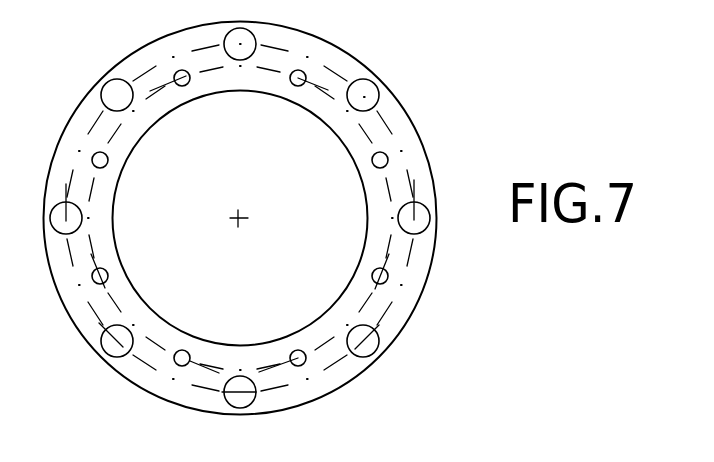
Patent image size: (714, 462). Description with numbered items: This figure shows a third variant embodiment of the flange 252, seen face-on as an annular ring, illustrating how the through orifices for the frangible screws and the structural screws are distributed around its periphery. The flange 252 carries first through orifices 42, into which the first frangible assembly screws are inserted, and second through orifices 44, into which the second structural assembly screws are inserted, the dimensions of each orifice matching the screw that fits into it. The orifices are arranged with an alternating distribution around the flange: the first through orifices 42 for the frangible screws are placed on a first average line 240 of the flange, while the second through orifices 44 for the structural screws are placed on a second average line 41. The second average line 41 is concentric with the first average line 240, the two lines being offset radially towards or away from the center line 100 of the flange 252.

The second average line 41 is at (355, 88).
The first through orifices 42 is at (177, 78).
The second through orifices 44 is at (122, 97).
The first average line 240 is at (387, 127).
The center line 100 is at (246, 215).
The flange 252 is at (420, 327).